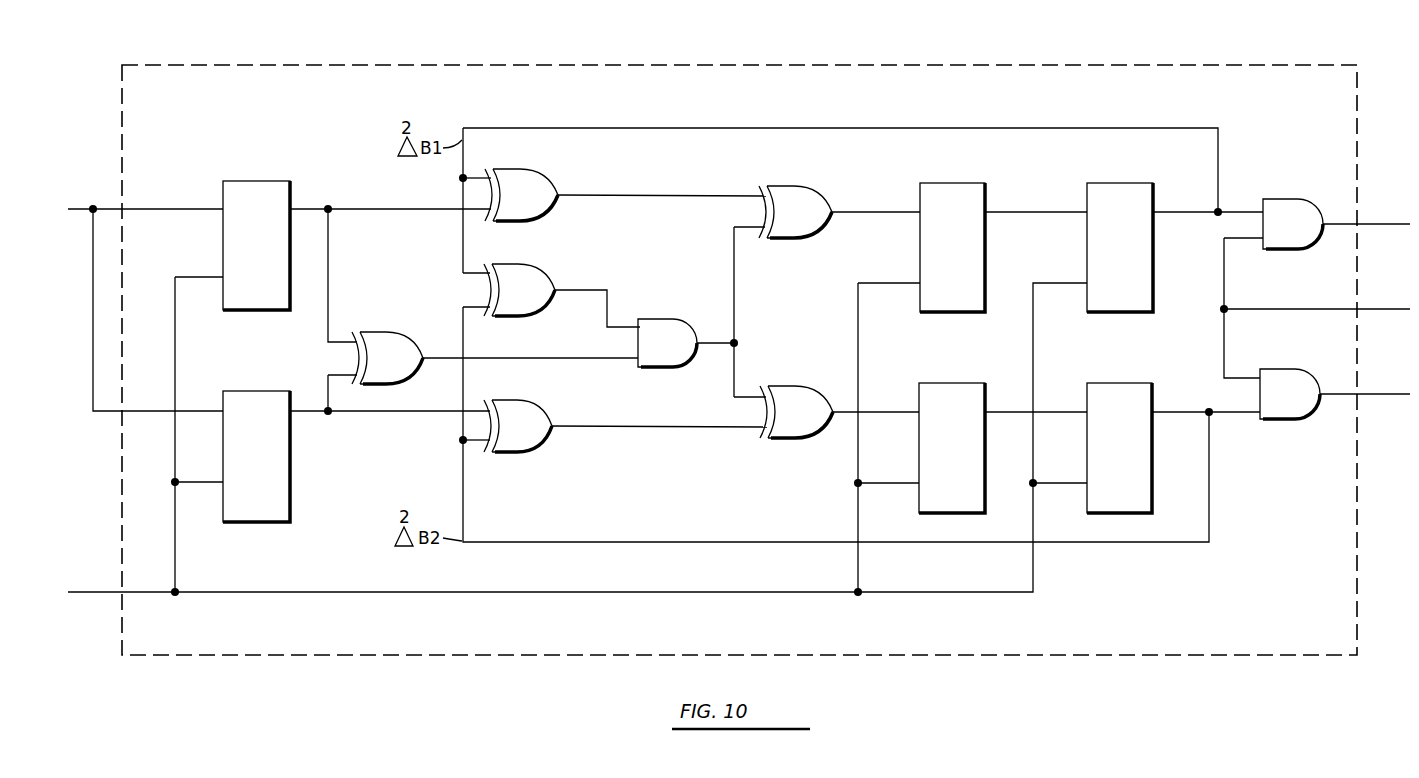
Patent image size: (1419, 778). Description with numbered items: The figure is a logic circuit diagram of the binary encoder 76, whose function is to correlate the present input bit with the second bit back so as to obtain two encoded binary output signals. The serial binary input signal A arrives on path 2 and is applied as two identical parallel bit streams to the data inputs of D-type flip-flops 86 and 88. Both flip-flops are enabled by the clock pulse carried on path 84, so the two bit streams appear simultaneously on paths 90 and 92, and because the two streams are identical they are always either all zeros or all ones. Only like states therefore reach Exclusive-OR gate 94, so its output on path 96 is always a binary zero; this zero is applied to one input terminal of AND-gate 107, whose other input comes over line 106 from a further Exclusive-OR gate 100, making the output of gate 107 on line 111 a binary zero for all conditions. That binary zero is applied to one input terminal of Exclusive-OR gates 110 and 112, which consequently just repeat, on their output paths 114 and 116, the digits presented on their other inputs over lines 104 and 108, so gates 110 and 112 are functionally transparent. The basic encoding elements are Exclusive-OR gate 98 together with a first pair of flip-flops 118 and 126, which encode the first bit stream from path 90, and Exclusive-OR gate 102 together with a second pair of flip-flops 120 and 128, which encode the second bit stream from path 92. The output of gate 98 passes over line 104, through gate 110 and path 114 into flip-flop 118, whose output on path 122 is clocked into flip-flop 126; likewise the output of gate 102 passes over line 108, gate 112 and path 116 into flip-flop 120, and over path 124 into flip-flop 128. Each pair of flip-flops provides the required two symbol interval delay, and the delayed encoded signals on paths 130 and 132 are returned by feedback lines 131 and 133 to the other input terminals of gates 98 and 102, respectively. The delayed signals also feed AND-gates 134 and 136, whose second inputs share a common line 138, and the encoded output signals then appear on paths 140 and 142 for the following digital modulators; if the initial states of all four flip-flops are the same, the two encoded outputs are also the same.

The path 2 is at (112, 207).
The binary encoder 76 is at (278, 578).
The path 84 is at (108, 594).
The D-type flip-flop 86 is at (257, 181).
The D-type flip-flop 88 is at (256, 391).
The path 90 is at (402, 209).
The path 92 is at (421, 413).
The Exclusive-OR gate 94 is at (370, 343).
The path 96 is at (540, 358).
The Exclusive-OR gate 98 is at (512, 175).
The exclusive OR gate 100 is at (502, 272).
The Exclusive-OR gate 102 is at (513, 407).
The exclusive OR gate output line 104 is at (652, 196).
The exclusive OR gate output line 106 is at (592, 290).
The AND-gate 107 is at (651, 322).
The exclusive OR gate output line 108 is at (609, 427).
The Exclusive-OR gate 110 is at (782, 190).
The AND gate output line 111 is at (713, 348).
The Exclusive-OR gate 112 is at (769, 391).
The exclusive OR gate output line 114 is at (898, 212).
The exclusive OR gate output line 116 is at (842, 425).
The flip-flop 118 is at (957, 183).
The flip-flop 120 is at (957, 383).
The flip-flop output line 122 is at (1045, 212).
The flip-flop output line 124 is at (1042, 412).
The flip-flop 126 is at (1126, 183).
The flip-flop 128 is at (1124, 383).
The flip-flop output line 130 is at (1172, 212).
The feedback line B1 131 is at (1219, 163).
The flip-flop output line 132 is at (1167, 412).
The feedback line B2 133 is at (1210, 473).
The AND gate 134 is at (1279, 201).
The AND gate 136 is at (1274, 371).
The output line 138 is at (1320, 309).
The path 140 is at (1361, 224).
The path 142 is at (1361, 394).